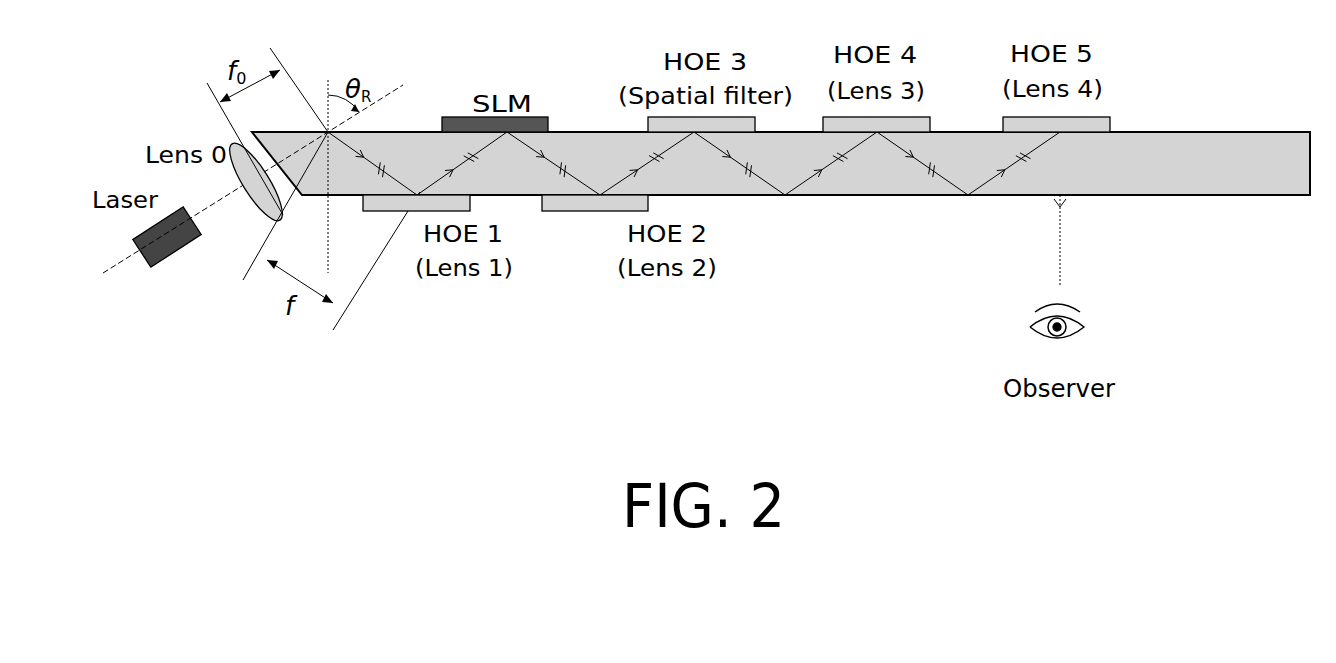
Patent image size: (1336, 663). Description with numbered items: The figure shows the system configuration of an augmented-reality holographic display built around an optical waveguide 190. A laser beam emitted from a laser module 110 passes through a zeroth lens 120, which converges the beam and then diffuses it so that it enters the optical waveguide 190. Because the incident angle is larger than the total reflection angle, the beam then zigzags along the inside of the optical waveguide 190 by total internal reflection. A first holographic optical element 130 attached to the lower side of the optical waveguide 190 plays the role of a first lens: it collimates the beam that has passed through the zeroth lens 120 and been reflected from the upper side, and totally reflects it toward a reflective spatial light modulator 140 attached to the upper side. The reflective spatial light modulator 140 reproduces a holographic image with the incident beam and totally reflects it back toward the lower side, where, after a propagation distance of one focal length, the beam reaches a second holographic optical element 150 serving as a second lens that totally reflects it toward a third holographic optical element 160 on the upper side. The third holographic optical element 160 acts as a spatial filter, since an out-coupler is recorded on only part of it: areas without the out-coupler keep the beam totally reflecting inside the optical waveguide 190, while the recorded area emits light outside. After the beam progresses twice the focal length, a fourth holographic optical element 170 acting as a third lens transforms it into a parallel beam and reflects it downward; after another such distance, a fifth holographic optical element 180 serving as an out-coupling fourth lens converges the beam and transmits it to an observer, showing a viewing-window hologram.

The laser module 110 is at (173, 255).
The lens 0 120 is at (250, 201).
The HOE 1 130 is at (370, 213).
The reflective SLM 140 is at (463, 116).
The HOE 2 150 is at (570, 213).
The HOE 3 160 is at (648, 128).
The HOE 4 170 is at (828, 120).
The HOE 5 180 is at (1012, 118).
The optical waveguide 190 is at (1268, 131).